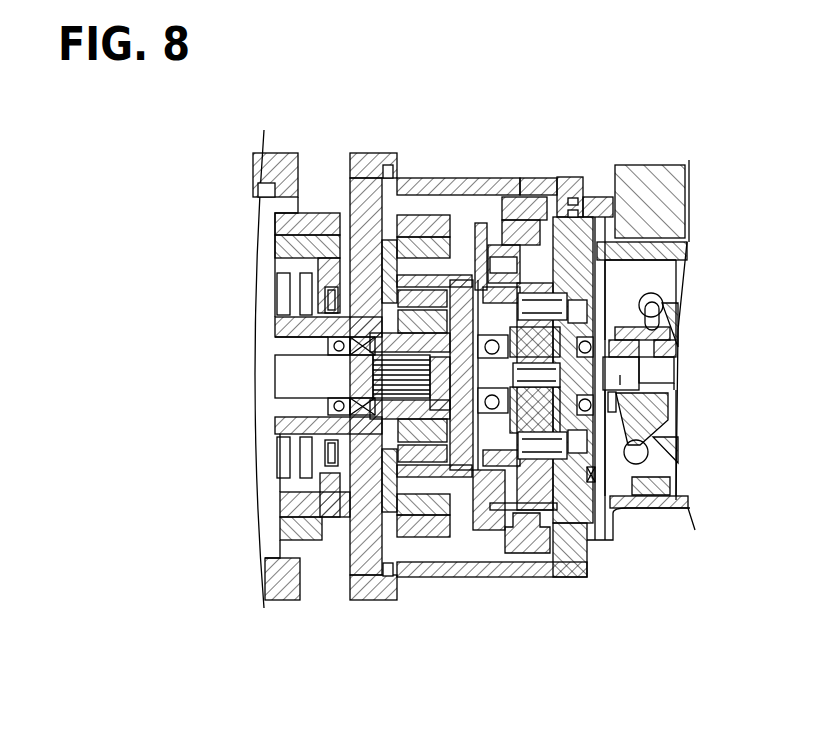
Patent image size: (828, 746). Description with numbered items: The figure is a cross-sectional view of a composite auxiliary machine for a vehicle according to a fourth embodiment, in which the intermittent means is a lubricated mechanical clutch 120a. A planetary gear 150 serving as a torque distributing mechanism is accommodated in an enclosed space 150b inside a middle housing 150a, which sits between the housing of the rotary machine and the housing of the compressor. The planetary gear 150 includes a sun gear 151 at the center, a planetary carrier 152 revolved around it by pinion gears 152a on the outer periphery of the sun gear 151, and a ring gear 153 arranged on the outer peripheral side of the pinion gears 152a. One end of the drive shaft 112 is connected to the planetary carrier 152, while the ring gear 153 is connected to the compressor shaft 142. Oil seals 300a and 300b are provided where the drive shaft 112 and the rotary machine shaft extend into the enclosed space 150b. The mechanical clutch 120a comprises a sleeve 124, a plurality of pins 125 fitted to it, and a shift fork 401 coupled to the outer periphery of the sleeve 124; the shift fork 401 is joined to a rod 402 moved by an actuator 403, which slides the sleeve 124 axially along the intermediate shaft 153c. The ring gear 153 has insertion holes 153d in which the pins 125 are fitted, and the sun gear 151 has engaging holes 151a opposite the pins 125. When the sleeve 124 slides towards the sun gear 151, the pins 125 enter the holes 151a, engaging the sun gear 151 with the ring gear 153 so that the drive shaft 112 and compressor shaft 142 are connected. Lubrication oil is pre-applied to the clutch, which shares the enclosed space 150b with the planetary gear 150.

The drive shaft 112 is at (300, 372).
The mechanical clutch 120a is at (489, 165).
The sleeve 124 is at (488, 200).
The pins 125 is at (480, 240).
The compressor shaft 142 is at (627, 483).
The planetary gear 150 is at (510, 363).
The middle housing 150a is at (578, 197).
The enclosed space 150b is at (500, 560).
The sun gear 151 is at (425, 510).
The engaging holes 151a is at (465, 330).
The planetary carrier 152 is at (492, 547).
The pinion gears 152a is at (440, 510).
The ring gear 153 is at (408, 540).
The intermediate shaft 153c is at (540, 520).
The insertion holes 153d is at (492, 290).
The oil seal 300a is at (355, 345).
The oil seal 300b is at (378, 300).
The shift fork 401 is at (533, 173).
The rod 402 is at (557, 187).
The actuator 403 is at (658, 173).